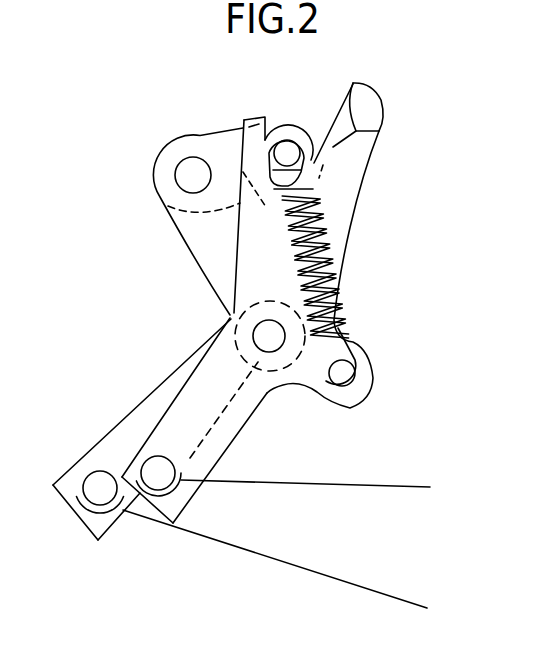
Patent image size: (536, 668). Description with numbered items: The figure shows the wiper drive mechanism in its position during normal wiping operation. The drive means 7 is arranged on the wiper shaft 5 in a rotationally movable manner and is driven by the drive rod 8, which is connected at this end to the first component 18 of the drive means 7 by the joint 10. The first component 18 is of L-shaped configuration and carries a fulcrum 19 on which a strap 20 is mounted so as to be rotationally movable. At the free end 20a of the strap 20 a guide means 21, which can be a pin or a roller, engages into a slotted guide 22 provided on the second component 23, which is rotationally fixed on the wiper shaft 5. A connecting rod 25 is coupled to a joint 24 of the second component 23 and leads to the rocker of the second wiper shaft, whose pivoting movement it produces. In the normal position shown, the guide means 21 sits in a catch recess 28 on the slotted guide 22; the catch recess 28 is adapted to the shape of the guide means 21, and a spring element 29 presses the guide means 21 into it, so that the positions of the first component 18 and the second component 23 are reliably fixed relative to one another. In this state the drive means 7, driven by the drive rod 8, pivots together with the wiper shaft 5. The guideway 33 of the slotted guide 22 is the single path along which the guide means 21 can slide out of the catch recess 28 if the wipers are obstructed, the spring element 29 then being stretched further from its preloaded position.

The wiper shaft 5 is at (262, 336).
The drive means 7 is at (178, 270).
The drive rod 8 is at (306, 569).
The joint 10 is at (95, 503).
The first component 18 is at (137, 410).
The fulcrum 19 is at (190, 183).
The strap 20 is at (204, 132).
The free end 20a is at (285, 127).
The guide means 21 is at (267, 125).
The slotted guide 22 is at (312, 115).
The second component 23 is at (246, 431).
The joint 24 is at (161, 490).
The connecting rod 25 is at (327, 486).
The catch recess 28 is at (258, 170).
The spring element 29 is at (334, 272).
The guideway 33 is at (380, 131).